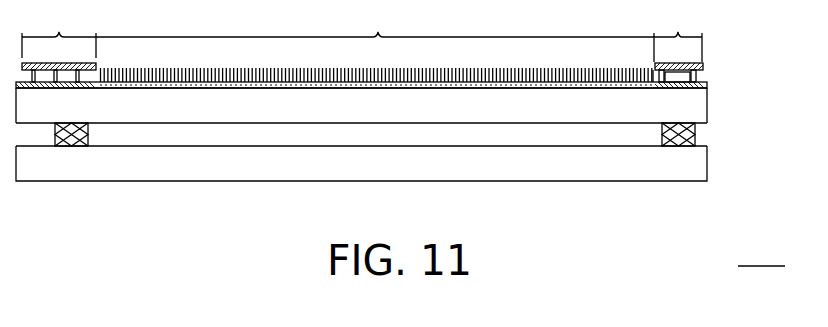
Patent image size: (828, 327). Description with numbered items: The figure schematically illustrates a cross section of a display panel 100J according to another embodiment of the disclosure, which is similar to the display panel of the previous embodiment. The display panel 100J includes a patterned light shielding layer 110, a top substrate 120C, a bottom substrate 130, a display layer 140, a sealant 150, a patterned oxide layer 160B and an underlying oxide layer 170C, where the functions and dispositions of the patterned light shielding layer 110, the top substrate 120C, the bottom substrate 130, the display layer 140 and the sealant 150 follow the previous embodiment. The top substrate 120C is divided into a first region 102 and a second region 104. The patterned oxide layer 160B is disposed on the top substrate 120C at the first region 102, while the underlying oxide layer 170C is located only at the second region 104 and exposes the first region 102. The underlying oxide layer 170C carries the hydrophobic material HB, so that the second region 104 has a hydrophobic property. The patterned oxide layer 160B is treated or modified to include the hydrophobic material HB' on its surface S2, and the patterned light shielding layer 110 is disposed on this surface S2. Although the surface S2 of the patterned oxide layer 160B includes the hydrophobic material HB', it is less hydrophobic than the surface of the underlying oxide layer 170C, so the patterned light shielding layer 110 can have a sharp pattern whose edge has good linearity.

The first region 102 is at (362, 32).
The second region 104 is at (375, 20).
The patterned light shielding layer 110 is at (702, 63).
The hydrophobic material HB is at (376, 62).
The hydrophobic material HB' is at (712, 54).
The surface S2 is at (655, 78).
The patterned oxide layer 160B is at (699, 82).
The underlying oxide layer 170C is at (708, 87).
The top substrate 120C is at (695, 107).
The display layer 140 is at (623, 140).
The sealant 150 is at (693, 135).
The bottom substrate 130 is at (695, 163).
The display panel 100J is at (761, 250).